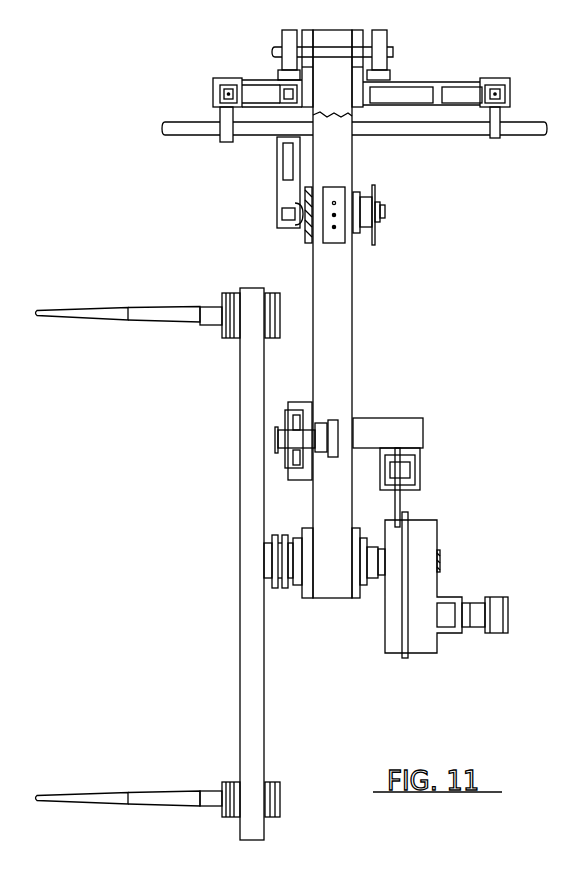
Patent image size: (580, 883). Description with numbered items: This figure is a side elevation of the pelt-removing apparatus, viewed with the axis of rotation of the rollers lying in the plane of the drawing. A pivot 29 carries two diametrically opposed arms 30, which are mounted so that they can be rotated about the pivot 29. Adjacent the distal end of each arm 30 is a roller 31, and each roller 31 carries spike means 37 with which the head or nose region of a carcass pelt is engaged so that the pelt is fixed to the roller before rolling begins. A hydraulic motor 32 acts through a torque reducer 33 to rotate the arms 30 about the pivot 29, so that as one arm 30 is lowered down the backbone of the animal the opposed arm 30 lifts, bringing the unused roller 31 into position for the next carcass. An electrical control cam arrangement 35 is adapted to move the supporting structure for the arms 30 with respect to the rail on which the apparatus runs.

The pivot 29 is at (272, 556).
The arm 30 is at (212, 564).
The roller 31 is at (158, 542).
The hydraulic motor 32 is at (487, 584).
The torque reducer 33 is at (433, 605).
The electrical control cam arrangement 35 is at (398, 211).
The spike means 37 is at (226, 303).